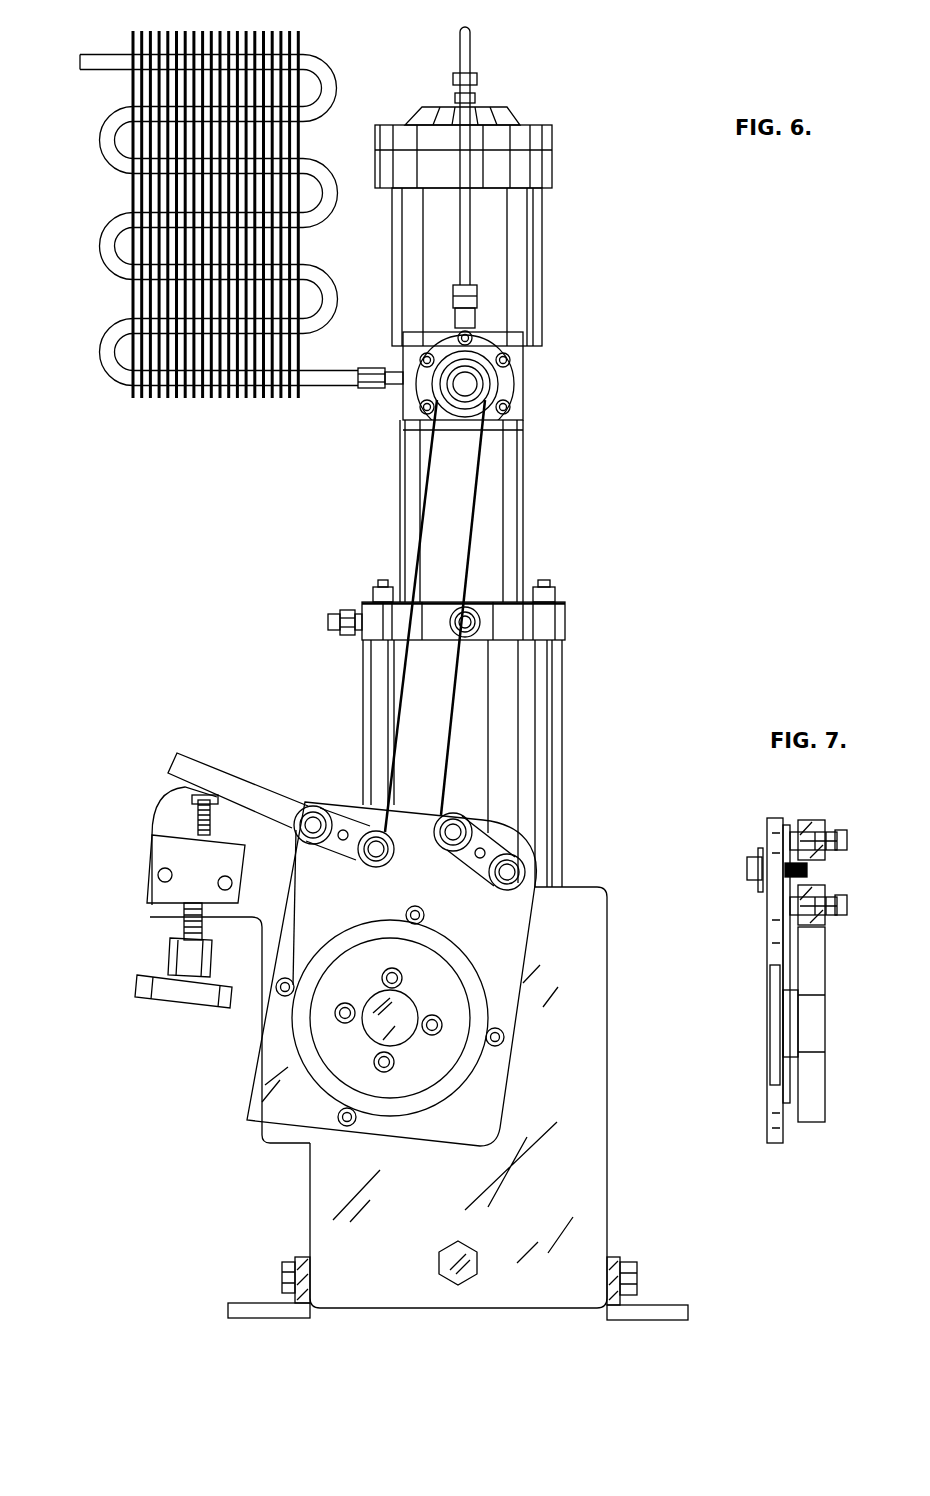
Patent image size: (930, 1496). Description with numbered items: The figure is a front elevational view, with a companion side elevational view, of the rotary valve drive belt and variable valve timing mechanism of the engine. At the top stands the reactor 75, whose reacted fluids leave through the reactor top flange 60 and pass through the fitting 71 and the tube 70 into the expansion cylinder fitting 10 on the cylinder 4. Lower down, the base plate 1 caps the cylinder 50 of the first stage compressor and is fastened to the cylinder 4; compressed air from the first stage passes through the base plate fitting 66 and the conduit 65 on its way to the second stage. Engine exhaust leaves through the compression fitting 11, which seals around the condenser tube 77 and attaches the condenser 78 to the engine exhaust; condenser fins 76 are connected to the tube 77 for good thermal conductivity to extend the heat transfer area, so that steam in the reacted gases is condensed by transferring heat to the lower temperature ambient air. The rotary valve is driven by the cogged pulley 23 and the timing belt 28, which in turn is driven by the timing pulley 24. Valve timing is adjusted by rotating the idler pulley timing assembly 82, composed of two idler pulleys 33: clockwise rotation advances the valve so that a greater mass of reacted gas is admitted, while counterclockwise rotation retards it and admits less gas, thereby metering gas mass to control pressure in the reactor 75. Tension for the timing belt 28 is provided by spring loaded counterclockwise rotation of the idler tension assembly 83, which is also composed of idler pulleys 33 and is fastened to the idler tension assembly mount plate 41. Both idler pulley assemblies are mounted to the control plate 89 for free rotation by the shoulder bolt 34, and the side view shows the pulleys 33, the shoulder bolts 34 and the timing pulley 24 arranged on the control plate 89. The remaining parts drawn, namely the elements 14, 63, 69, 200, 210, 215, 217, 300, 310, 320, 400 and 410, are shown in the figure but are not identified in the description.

In FIG. 6, the base plate 1 is at (566, 617).
In FIG. 6, the cylinder 4 is at (526, 535).
In FIG. 6, the expansion cylinder fitting 10 is at (478, 297).
In FIG. 6, the compression fitting 11 is at (360, 386).
In FIG. 6, the bearing hub 14 is at (506, 394).
In FIG. 6, the cogged pulley 23 is at (403, 398).
In FIG. 6, the timing pulley 24 is at (488, 948).
In FIG. 7, the timing pulley 24 is at (823, 980).
In FIG. 6, the timing belt 28 is at (480, 533).
In FIG. 6, the idler pulley 33 is at (310, 803).
In FIG. 7, the idler pulley 33 is at (822, 818).
In FIG. 7, the shoulder bolt 34 is at (799, 865).
In FIG. 6, the idler tension assembly mount plate 41 is at (485, 851).
In FIG. 6, the cylinder 50 is at (563, 706).
In FIG. 6, the reactor top flange 60 is at (555, 140).
In FIG. 6, the cylinder body 63 is at (545, 232).
In FIG. 6, the conduit 65 is at (337, 617).
In FIG. 6, the base plate fitting 66 is at (347, 637).
In FIG. 6, the bolt 69 is at (478, 626).
In FIG. 6, the tube 70 is at (471, 42).
In FIG. 6, the fitting 71 is at (453, 95).
In FIG. 6, the reactor 75 is at (517, 182).
In FIG. 6, the condenser fins 76 is at (250, 400).
In FIG. 6, the condenser tube 77 is at (112, 362).
In FIG. 6, the condenser 78 is at (208, 258).
In FIG. 6, the idler pulley timing assembly 82 is at (206, 754).
In FIG. 6, the idler tension assembly 83 is at (494, 830).
In FIG. 6, the control plate 89 is at (343, 830).
In FIG. 7, the control plate 89 is at (761, 843).
In FIG. 6, the housing 200 is at (607, 1122).
In FIG. 6, the hex plug 210 is at (455, 1287).
In FIG. 6, the mounting foot 215 is at (256, 1305).
In FIG. 6, the mounting bolt 217 is at (282, 1272).
In FIG. 6, the adjusting fixture 300 is at (168, 808).
In FIG. 6, the adjusting knob 310 is at (158, 962).
In FIG. 6, the mounting plate 320 is at (505, 1040).
In FIG. 6, the bolt 400 is at (548, 585).
In FIG. 6, the nut 410 is at (556, 594).